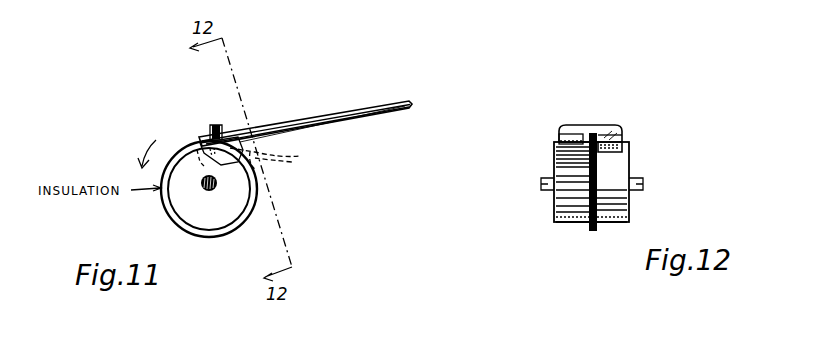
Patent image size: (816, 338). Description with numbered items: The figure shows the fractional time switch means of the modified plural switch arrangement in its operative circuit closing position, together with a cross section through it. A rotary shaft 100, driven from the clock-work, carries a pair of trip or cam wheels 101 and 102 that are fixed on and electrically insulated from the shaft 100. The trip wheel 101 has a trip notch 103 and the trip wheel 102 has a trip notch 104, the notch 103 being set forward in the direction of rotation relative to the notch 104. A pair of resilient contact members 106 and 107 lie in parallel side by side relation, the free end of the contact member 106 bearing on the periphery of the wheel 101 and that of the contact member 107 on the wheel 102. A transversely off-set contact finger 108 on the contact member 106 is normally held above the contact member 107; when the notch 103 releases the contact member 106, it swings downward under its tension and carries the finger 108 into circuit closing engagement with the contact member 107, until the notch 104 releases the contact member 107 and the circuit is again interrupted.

In FIG. 11, the rotary shaft 100 is at (209, 191).
In FIG. 12, the rotary shaft 100 is at (543, 187).
In FIG. 11, the trip or cam wheel 101 is at (287, 162).
In FIG. 12, the trip or cam wheel 101 is at (613, 202).
In FIG. 11, the trip or cam wheel 102 is at (250, 190).
In FIG. 12, the trip or cam wheel 102 is at (565, 212).
In FIG. 11, the trip notch 103 is at (186, 152).
In FIG. 12, the trip notch 103 is at (629, 155).
In FIG. 11, the trip notch 104 is at (257, 148).
In FIG. 12, the trip notch 104 is at (570, 160).
In FIG. 11, the resilient contact member 106 is at (310, 124).
In FIG. 12, the resilient contact member 106 is at (612, 137).
In FIG. 11, the resilient contact member 107 is at (283, 121).
In FIG. 12, the resilient contact member 107 is at (557, 137).
In FIG. 11, the contact finger 108 is at (216, 124).
In FIG. 12, the contact finger 108 is at (584, 125).